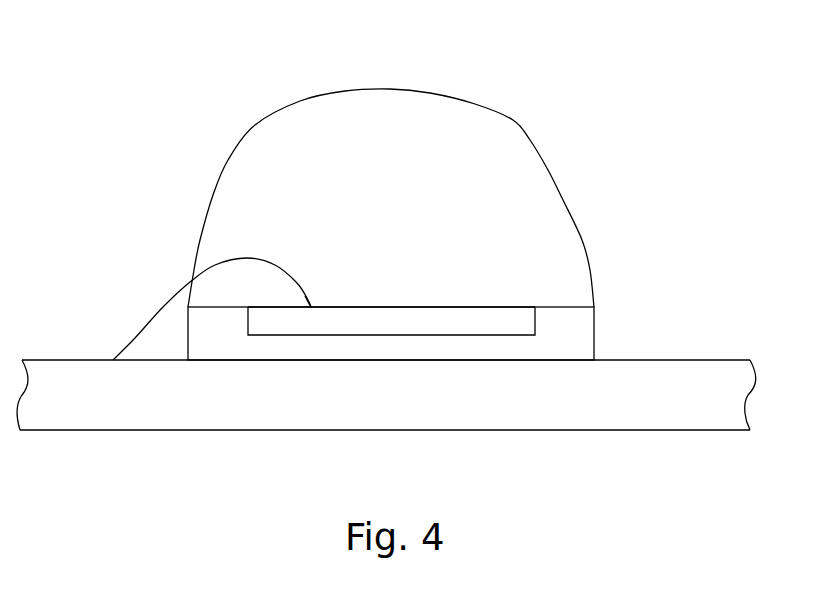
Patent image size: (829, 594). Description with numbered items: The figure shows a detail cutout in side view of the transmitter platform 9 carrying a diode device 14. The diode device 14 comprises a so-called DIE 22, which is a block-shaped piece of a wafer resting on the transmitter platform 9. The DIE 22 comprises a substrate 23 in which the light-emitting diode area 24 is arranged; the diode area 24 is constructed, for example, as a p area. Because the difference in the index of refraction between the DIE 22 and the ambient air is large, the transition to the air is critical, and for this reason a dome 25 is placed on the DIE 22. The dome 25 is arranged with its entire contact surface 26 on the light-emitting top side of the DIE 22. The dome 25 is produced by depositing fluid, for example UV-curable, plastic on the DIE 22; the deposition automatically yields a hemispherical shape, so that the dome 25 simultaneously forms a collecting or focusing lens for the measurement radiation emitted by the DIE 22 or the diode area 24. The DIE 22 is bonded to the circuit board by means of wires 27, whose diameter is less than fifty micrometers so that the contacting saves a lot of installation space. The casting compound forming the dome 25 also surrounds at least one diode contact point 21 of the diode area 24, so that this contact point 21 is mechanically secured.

The transmitter platform 9 is at (75, 411).
The diode device 14 is at (385, 202).
The diode contact point 21 is at (312, 306).
The DIE 22 is at (427, 297).
The substrate 23 is at (232, 351).
The light-emitting diode area 24 is at (285, 332).
The dome 25 is at (410, 196).
The contact surface 26 is at (345, 305).
The wires 27 is at (163, 307).